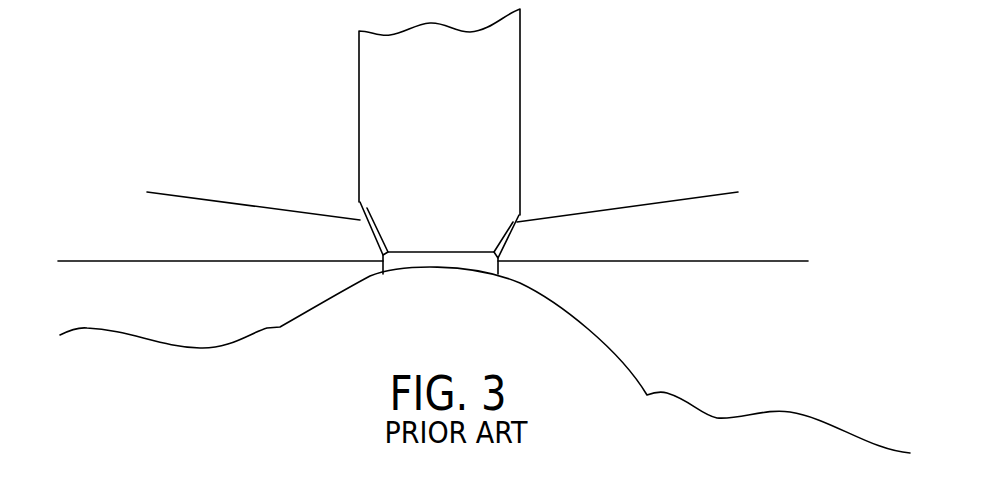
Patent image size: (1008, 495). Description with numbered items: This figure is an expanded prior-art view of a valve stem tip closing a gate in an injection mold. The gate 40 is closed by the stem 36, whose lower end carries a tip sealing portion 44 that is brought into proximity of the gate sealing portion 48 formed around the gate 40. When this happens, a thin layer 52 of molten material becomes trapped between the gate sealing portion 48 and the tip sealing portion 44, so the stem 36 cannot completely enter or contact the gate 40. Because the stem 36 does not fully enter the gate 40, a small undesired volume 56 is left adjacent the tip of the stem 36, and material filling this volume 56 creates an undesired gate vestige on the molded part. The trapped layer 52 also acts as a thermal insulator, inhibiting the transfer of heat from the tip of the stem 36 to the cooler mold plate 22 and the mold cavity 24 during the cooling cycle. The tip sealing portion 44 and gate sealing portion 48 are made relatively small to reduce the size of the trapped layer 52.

The stem 36 is at (453, 130).
The mold plate 22 is at (197, 240).
The mold cavity 24 is at (815, 355).
The tip sealing portion 44 is at (395, 250).
The gate sealing portion 48 is at (378, 248).
The thin layer of molten material 52 is at (360, 222).
The undesired volume 56 is at (435, 254).
The gate 40 is at (432, 270).